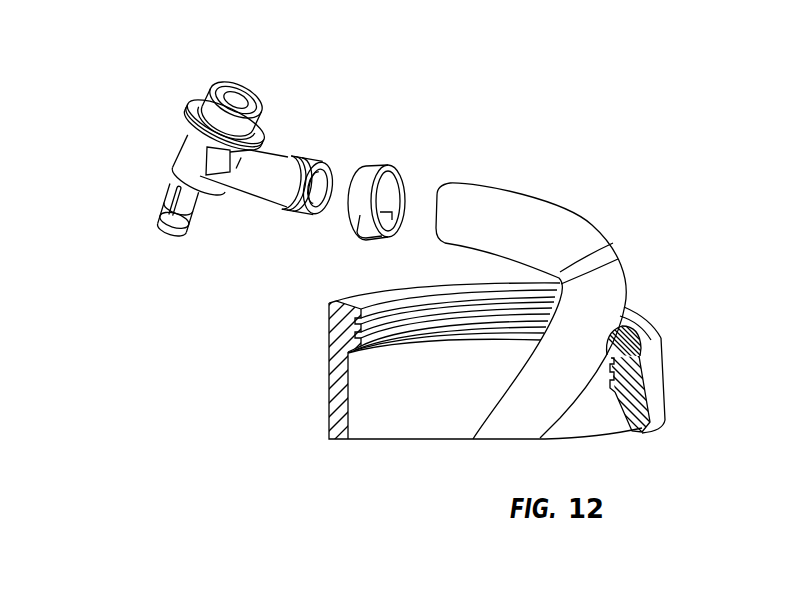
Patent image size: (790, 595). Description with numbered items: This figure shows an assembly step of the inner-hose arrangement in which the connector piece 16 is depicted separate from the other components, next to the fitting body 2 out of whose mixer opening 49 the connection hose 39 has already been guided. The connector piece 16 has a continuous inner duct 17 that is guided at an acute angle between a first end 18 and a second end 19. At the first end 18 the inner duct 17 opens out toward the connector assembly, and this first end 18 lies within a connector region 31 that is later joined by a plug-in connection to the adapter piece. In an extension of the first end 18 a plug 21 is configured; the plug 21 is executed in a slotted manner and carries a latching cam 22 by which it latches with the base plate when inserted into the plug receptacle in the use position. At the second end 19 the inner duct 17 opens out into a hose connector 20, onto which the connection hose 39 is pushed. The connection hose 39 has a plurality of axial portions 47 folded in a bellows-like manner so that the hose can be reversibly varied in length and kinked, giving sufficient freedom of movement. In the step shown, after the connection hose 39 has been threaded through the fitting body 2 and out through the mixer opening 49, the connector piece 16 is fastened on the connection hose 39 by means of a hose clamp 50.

The fitting body 2 is at (328, 402).
The connector piece 16 is at (139, 177).
The inner duct 17 is at (237, 92).
The first end 18 is at (191, 94).
The second end 19 is at (266, 216).
The hose connector 20 is at (295, 224).
The plug 21 is at (164, 202).
The latching cam 22 is at (190, 234).
The connector region 31 is at (243, 124).
The connection hose 39 is at (540, 242).
The axial portion 47 is at (624, 247).
The mixer opening 49 is at (410, 305).
The hose clamp 50 is at (367, 187).